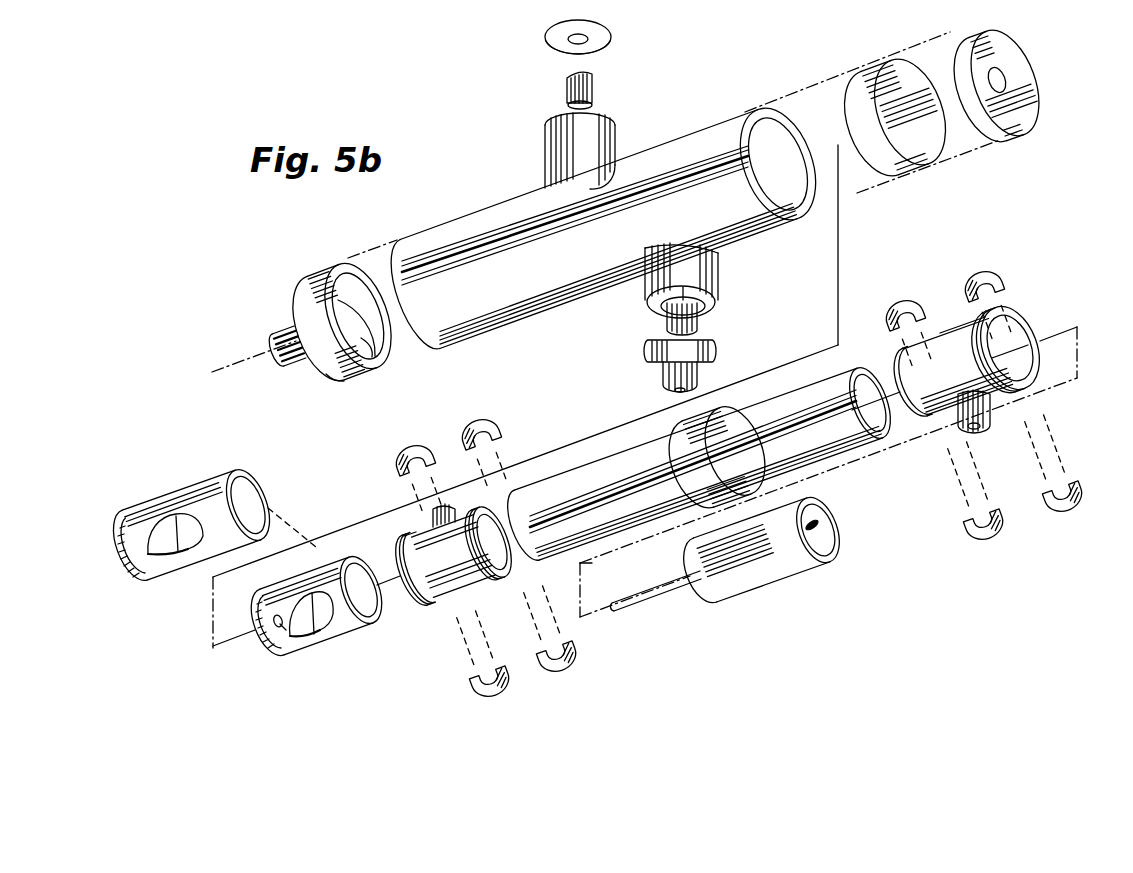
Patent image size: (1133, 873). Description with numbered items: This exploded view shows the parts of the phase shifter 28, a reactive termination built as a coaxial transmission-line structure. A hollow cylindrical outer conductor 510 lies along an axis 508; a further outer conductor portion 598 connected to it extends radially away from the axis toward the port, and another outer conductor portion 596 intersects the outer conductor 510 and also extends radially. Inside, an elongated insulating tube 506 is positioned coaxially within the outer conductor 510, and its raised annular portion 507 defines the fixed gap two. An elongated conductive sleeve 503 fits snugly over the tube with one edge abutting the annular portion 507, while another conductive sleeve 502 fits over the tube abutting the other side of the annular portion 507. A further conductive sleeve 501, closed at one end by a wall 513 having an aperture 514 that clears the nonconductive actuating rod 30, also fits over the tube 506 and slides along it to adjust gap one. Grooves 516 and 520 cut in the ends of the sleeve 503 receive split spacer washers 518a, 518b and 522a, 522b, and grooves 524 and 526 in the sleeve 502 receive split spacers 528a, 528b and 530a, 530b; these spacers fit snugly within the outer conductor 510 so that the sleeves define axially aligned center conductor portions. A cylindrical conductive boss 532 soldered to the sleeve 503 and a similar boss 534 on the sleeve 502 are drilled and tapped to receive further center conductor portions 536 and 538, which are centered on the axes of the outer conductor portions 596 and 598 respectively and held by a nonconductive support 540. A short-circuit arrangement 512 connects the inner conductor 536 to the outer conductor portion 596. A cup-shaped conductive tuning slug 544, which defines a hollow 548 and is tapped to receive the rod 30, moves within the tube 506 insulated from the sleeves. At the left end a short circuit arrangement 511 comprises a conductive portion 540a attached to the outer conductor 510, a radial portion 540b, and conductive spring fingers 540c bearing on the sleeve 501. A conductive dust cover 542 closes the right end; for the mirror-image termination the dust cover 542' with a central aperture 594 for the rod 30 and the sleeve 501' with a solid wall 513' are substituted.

The phase shifter 28 is at (364, 212).
The nonconductive actuating rod 30 is at (666, 598).
The conductive sleeve 501 is at (315, 615).
The conductive sleeve 501' is at (214, 535).
The conductive sleeve 502 is at (449, 512).
The conductive sleeve 503 is at (950, 334).
The insulating tube 506 is at (645, 486).
The raised annular portion 507 is at (702, 512).
The axis 508 is at (838, 150).
The outer conductor 510 is at (695, 122).
The short circuit arrangement 511 is at (342, 380).
The short-circuit arrangement 512 is at (716, 352).
The wall 513 is at (264, 645).
The solid wall 513' is at (181, 534).
The aperture 514 is at (290, 610).
The groove 516 is at (1010, 318).
The upper portion of washer spacer 518a is at (996, 282).
The lower portion of washer spacer 518b is at (1081, 500).
The groove 520 is at (983, 378).
The upper portion of split spacer 522a is at (905, 300).
The lower portion of split spacer 522b is at (984, 538).
The groove 524 is at (497, 578).
The groove 526 is at (428, 538).
The split spacer 528a is at (496, 426).
The split spacer 528b is at (579, 665).
The split spacer 530a is at (398, 463).
The split spacer 530b is at (478, 691).
The conductive boss 532 is at (980, 426).
The conductive boss 534 is at (448, 502).
The center conductor portion 536 is at (700, 320).
The center conductor portion 538 is at (593, 96).
The nonconductive support 540 is at (607, 46).
The conductive portion 540a is at (344, 317).
The radial conductive portion 540b is at (386, 366).
The conductive spring fingers 540c is at (290, 308).
The conductive dust cover 542 is at (887, 106).
The dust cover 542' is at (1013, 96).
The conductive slug 544 is at (786, 548).
The hollow 548 is at (818, 521).
The central aperture 594 is at (997, 70).
The outer conductor portion 596 is at (652, 296).
The outer conductor portion 598 is at (616, 140).